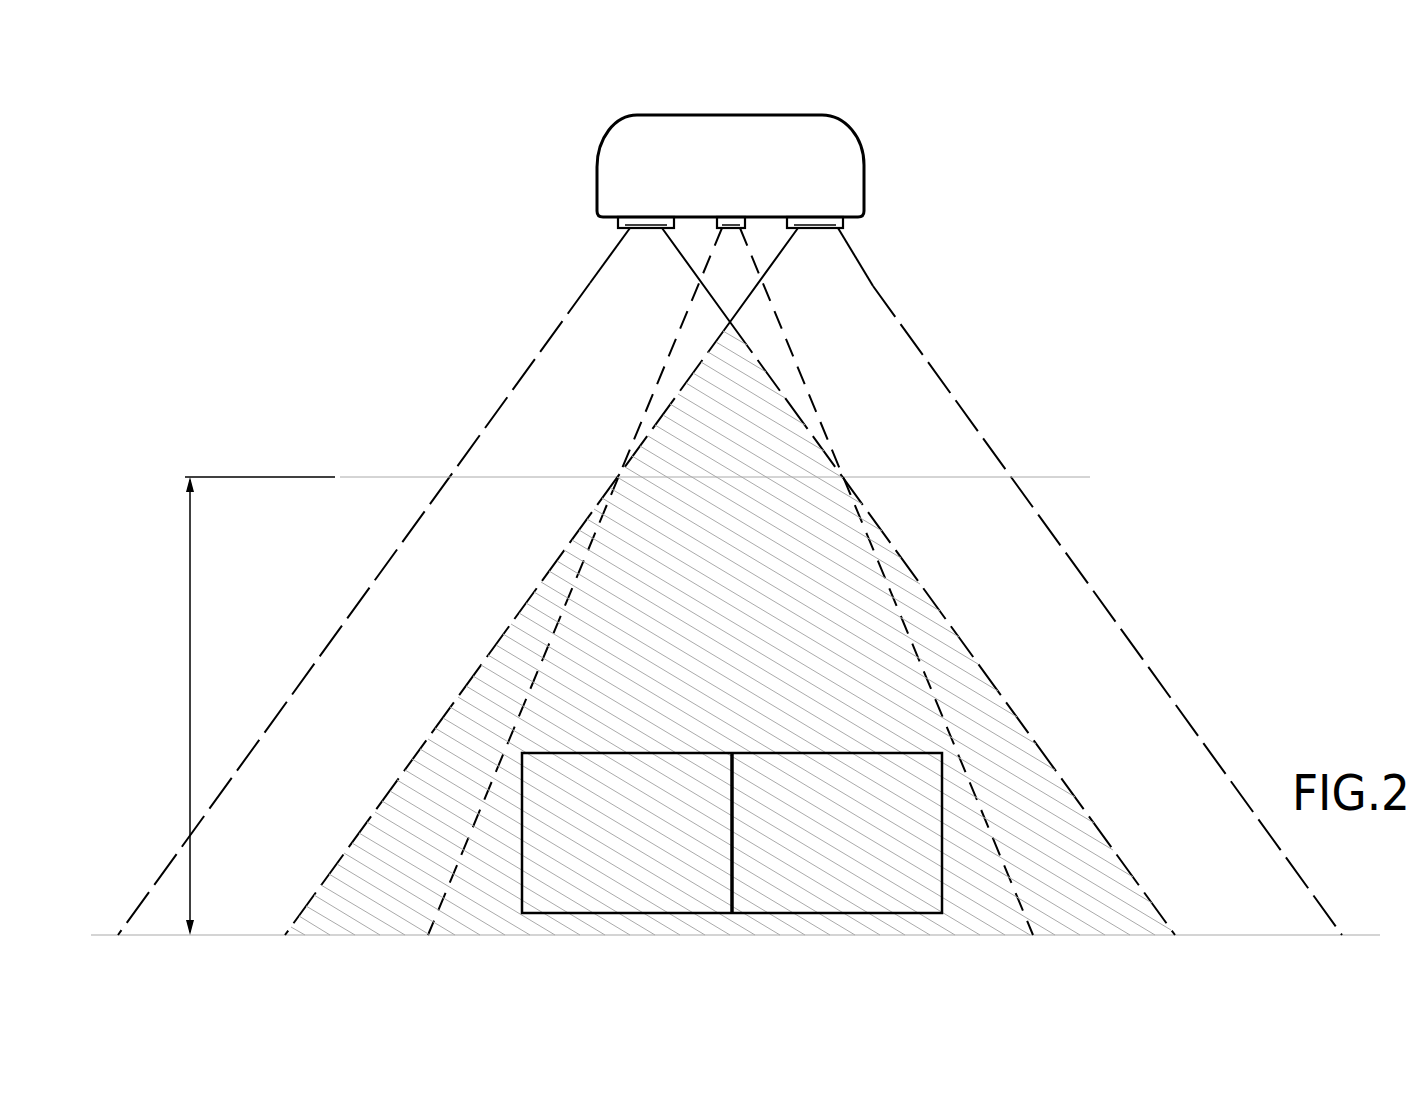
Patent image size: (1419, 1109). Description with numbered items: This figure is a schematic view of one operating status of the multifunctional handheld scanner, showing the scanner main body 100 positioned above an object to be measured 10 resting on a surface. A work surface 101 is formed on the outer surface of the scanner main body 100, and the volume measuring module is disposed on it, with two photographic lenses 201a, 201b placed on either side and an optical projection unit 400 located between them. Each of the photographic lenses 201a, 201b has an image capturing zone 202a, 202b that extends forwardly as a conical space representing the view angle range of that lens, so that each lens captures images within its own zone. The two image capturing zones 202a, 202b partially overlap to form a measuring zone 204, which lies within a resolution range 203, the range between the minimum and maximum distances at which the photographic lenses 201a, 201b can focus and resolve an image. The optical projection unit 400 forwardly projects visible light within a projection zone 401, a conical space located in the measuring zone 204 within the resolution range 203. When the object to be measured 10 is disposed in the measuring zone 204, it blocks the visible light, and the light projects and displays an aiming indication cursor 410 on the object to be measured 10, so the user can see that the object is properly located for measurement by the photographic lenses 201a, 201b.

The scanner main body 100 is at (847, 158).
The photographic lens 201b is at (618, 223).
The photographic lens 201a is at (843, 222).
The work surface 101 is at (688, 217).
The optical projection unit 400 is at (745, 225).
The projection zone 401 is at (812, 398).
The image capturing zone 202b is at (485, 428).
The image capturing zone 202a is at (977, 428).
The resolution range 203 is at (628, 706).
The measuring zone 204 is at (757, 634).
The aiming indication cursor 410 is at (750, 817).
The object to be measured 10 is at (925, 808).